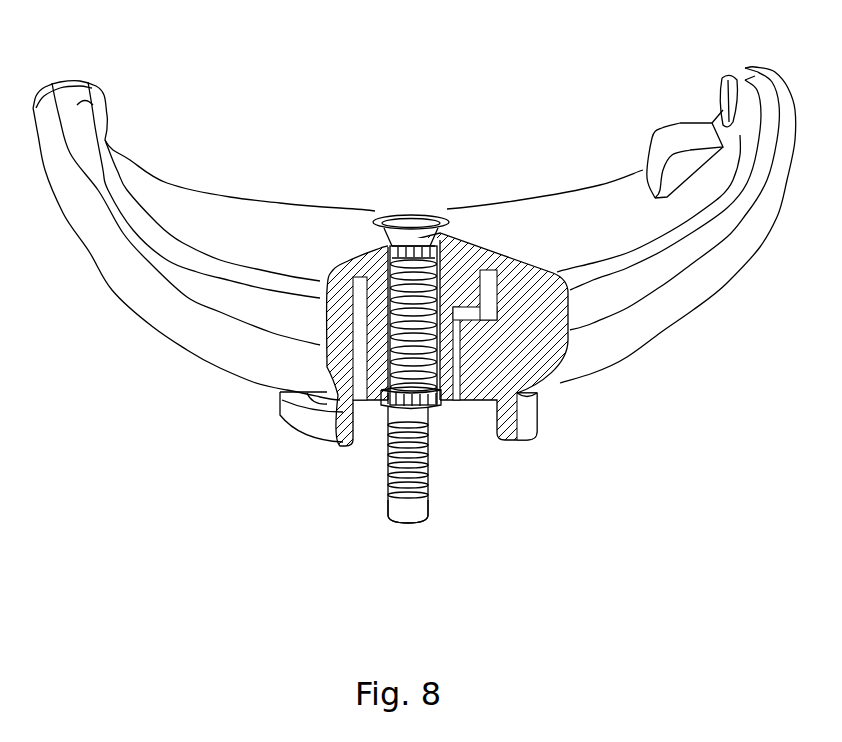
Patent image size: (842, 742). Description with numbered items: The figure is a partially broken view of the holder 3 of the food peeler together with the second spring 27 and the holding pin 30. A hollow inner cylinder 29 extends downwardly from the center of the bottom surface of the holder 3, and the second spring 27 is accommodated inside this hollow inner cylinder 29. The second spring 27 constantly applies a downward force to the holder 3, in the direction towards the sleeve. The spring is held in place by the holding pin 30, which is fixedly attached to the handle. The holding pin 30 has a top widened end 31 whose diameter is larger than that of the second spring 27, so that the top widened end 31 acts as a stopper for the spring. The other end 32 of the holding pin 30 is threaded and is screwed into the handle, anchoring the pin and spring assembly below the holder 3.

The holder 3 is at (148, 294).
The second spring 27 is at (445, 397).
The hollow inner cylinder 29 is at (440, 373).
The holding pin 30 is at (388, 447).
The top widened end 31 is at (423, 230).
The other end 32 is at (385, 490).